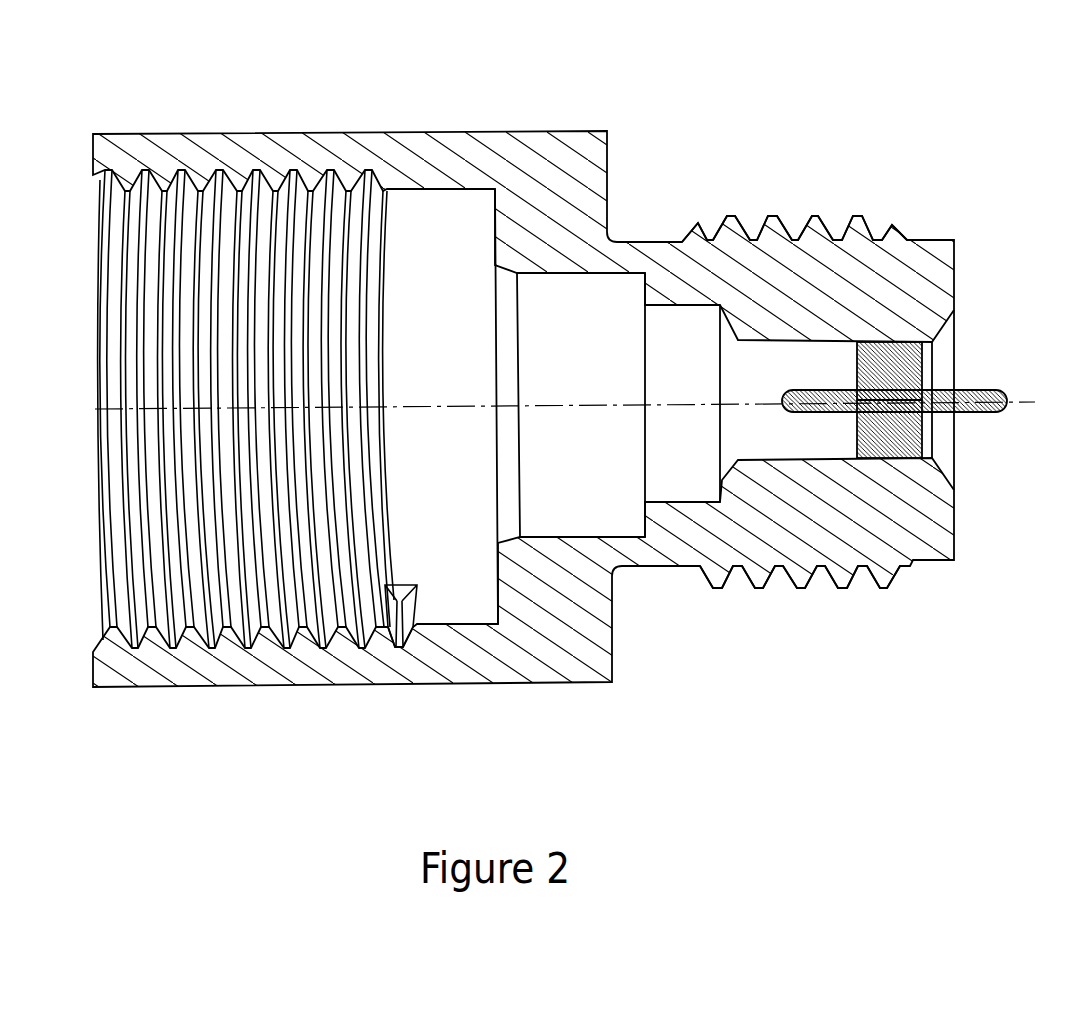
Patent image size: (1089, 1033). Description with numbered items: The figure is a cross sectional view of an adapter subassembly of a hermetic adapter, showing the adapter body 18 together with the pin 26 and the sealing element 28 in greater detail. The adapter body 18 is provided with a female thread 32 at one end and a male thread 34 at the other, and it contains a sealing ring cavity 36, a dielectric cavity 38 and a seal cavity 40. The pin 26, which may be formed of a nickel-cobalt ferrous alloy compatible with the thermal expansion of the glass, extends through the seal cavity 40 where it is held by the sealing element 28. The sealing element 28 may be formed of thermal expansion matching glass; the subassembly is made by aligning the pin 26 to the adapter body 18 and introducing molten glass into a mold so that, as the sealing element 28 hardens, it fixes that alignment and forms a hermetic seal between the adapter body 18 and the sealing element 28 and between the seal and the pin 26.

The adapter body 18 is at (538, 177).
The pin 26 is at (977, 397).
The sealing element 28 is at (888, 437).
The female thread 32 is at (245, 257).
The male thread 34 is at (832, 219).
The sealing ring cavity 36 is at (585, 485).
The dielectric cavity 38 is at (697, 473).
The seal cavity 40 is at (902, 343).